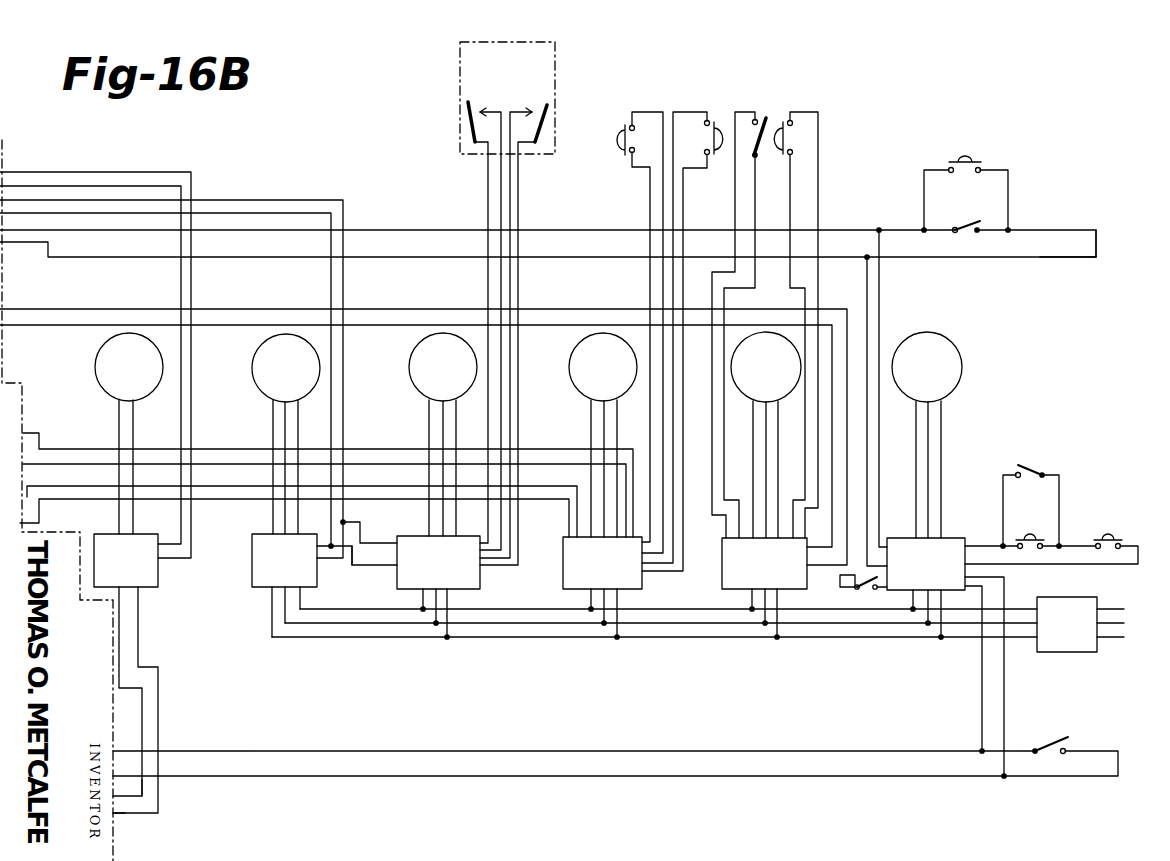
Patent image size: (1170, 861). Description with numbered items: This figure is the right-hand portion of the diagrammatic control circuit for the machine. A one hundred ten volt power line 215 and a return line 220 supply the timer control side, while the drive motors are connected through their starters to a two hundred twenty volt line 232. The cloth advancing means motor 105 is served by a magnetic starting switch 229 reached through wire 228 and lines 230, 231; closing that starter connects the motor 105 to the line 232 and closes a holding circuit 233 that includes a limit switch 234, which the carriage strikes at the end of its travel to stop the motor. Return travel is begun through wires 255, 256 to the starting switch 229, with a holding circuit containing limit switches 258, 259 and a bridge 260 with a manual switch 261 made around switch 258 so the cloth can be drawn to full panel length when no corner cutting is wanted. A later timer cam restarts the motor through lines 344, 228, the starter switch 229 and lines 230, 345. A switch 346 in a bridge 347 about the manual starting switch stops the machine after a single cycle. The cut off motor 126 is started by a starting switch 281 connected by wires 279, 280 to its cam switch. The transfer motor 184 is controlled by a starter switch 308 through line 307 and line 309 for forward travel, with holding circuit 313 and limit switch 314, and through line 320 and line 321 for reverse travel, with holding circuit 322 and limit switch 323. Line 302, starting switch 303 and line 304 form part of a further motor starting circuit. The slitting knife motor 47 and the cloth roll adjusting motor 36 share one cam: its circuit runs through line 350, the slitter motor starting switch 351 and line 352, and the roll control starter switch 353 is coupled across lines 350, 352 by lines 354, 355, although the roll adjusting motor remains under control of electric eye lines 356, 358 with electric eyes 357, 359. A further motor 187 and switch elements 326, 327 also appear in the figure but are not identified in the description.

The line 302 is at (52, 172).
The line 304 is at (28, 187).
The line 350 is at (28, 202).
The line 352 is at (34, 215).
The line 354 is at (382, 517).
The line 355 is at (349, 564).
The line 344 is at (92, 235).
The line 345 is at (38, 244).
The line 231 is at (1060, 258).
The wire 279 is at (34, 309).
The wire 280 is at (36, 326).
The line 320 is at (28, 433).
The line 321 is at (74, 464).
The line 307 is at (30, 494).
The line 309 is at (82, 499).
The motor 187 is at (96, 355).
The slitting knife motor 47 is at (254, 354).
The cloth roll adjusting motor 36 is at (408, 351).
The transfer motor 184 is at (576, 348).
The cut off motor 126 is at (779, 359).
The cloth advancing means motor 105 is at (940, 359).
The starting switch 303 is at (140, 571).
The slitter motor starting switch 351 is at (300, 571).
The roll control starter switch 353 is at (456, 573).
The starter switch 308 is at (620, 573).
The starting switch 281 is at (782, 573).
The magnetic starting switch 229 is at (945, 573).
The 220 v. line 232 is at (1132, 596).
The electric eye line 356 is at (488, 178).
The electric eye 357 is at (468, 126).
The electric eye line 358 is at (520, 180).
The electric eye 359 is at (548, 102).
The holding circuit 322 is at (650, 195).
The limit switch 323 is at (624, 130).
The holding circuit 313 is at (690, 190).
The limit switch 314 is at (712, 116).
The line 230 is at (865, 280).
The wire 228 is at (880, 292).
The bridge 347 is at (922, 178).
The switch 346 is at (974, 158).
The conductor 327 is at (1007, 228).
The switch 326 is at (966, 220).
The limit switch 258 is at (1040, 520).
The limit switch 259 is at (1116, 520).
The bridge 260 is at (1003, 503).
The manual switch 261 is at (1040, 466).
The holding circuit 233 is at (838, 588).
The limit switch 234 is at (872, 588).
The wire 255 is at (132, 750).
The wire 256 is at (132, 775).
The return line 220 is at (130, 796).
The 110 v. power line 215 is at (116, 816).